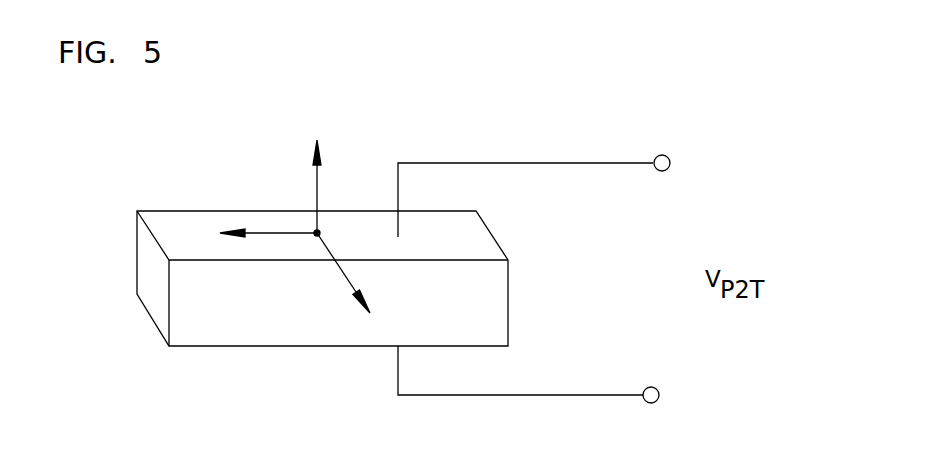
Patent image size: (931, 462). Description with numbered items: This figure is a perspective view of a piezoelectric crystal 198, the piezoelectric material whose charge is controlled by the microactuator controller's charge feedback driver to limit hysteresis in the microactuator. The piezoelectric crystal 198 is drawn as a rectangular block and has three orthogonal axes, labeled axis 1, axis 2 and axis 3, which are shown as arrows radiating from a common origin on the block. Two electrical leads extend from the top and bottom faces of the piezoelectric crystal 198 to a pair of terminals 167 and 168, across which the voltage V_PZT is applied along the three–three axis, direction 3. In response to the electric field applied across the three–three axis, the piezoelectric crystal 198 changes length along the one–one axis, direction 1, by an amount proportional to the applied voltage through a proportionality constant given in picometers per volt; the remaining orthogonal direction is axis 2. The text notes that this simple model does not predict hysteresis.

The piezoelectric crystal 198 is at (152, 277).
The terminal 167 is at (558, 163).
The terminal 168 is at (562, 395).
The axis 1 is at (260, 234).
The axis 2 is at (352, 284).
The axis 3 is at (317, 172).